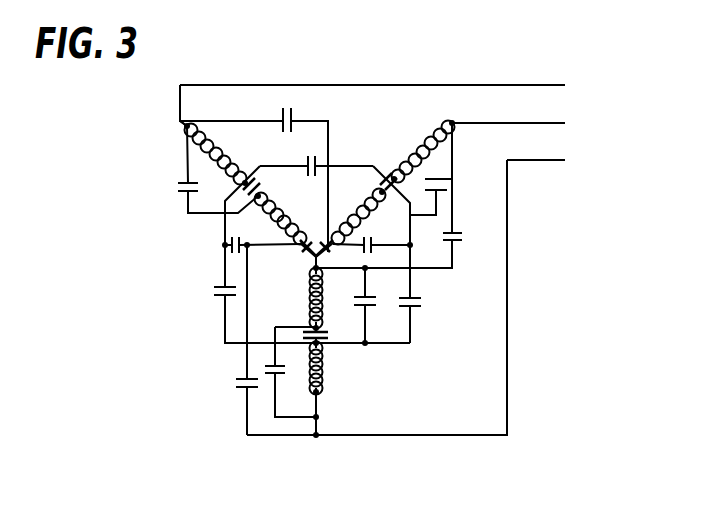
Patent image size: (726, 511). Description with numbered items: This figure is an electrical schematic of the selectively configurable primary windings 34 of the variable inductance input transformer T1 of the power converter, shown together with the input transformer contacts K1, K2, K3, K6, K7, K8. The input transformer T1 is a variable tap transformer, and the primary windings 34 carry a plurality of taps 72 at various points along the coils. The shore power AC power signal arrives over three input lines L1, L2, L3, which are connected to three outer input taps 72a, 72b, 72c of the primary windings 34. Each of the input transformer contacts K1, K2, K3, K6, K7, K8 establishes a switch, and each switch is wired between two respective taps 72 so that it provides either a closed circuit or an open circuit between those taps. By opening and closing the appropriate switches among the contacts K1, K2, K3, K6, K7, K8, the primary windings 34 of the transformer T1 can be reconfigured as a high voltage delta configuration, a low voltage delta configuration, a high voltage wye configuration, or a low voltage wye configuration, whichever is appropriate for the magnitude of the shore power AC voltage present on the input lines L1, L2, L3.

The primary windings 34 is at (351, 146).
The taps 72 is at (243, 182).
The outer input tap 72a is at (180, 121).
The outer input tap 72b is at (453, 123).
The outer input tap 72c is at (316, 437).
The input transformer contact K1 is at (256, 187).
The input transformer contact K2 is at (186, 182).
The input transformer contact K3 is at (308, 156).
The input transformer contact K6 is at (455, 245).
The input transformer contact K7 is at (225, 235).
The input transformer contact K8 is at (289, 112).
The input line L1 is at (497, 85).
The input line L2 is at (523, 123).
The input line L3 is at (551, 160).
The variable inductance input transformer T1 is at (98, 268).